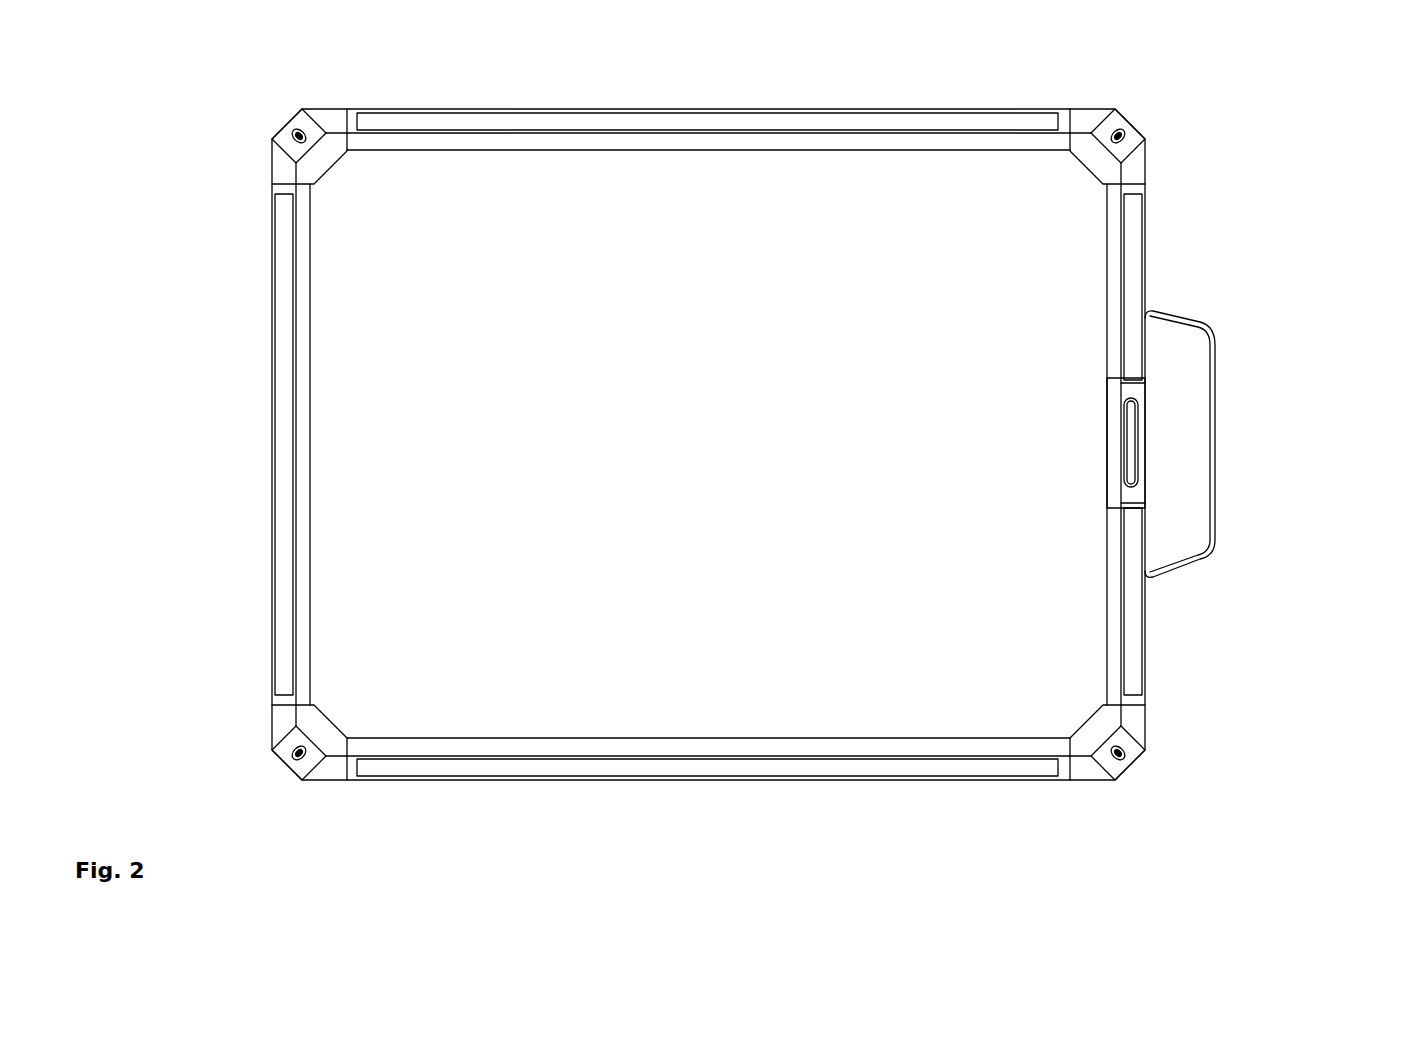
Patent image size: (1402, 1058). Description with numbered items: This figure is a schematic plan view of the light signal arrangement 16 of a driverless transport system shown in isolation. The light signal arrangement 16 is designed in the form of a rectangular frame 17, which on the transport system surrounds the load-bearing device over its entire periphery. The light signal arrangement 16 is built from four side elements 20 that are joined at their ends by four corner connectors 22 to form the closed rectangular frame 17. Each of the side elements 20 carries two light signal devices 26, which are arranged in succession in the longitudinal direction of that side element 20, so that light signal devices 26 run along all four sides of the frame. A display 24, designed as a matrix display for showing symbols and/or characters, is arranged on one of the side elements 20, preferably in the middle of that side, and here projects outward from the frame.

The light signal arrangement 16 is at (750, 420).
The rectangular frame 17 is at (750, 420).
The side element 20 is at (626, 178).
The corner connector 22 is at (278, 167).
The display 24 is at (1200, 410).
The light signal device 26 is at (625, 444).